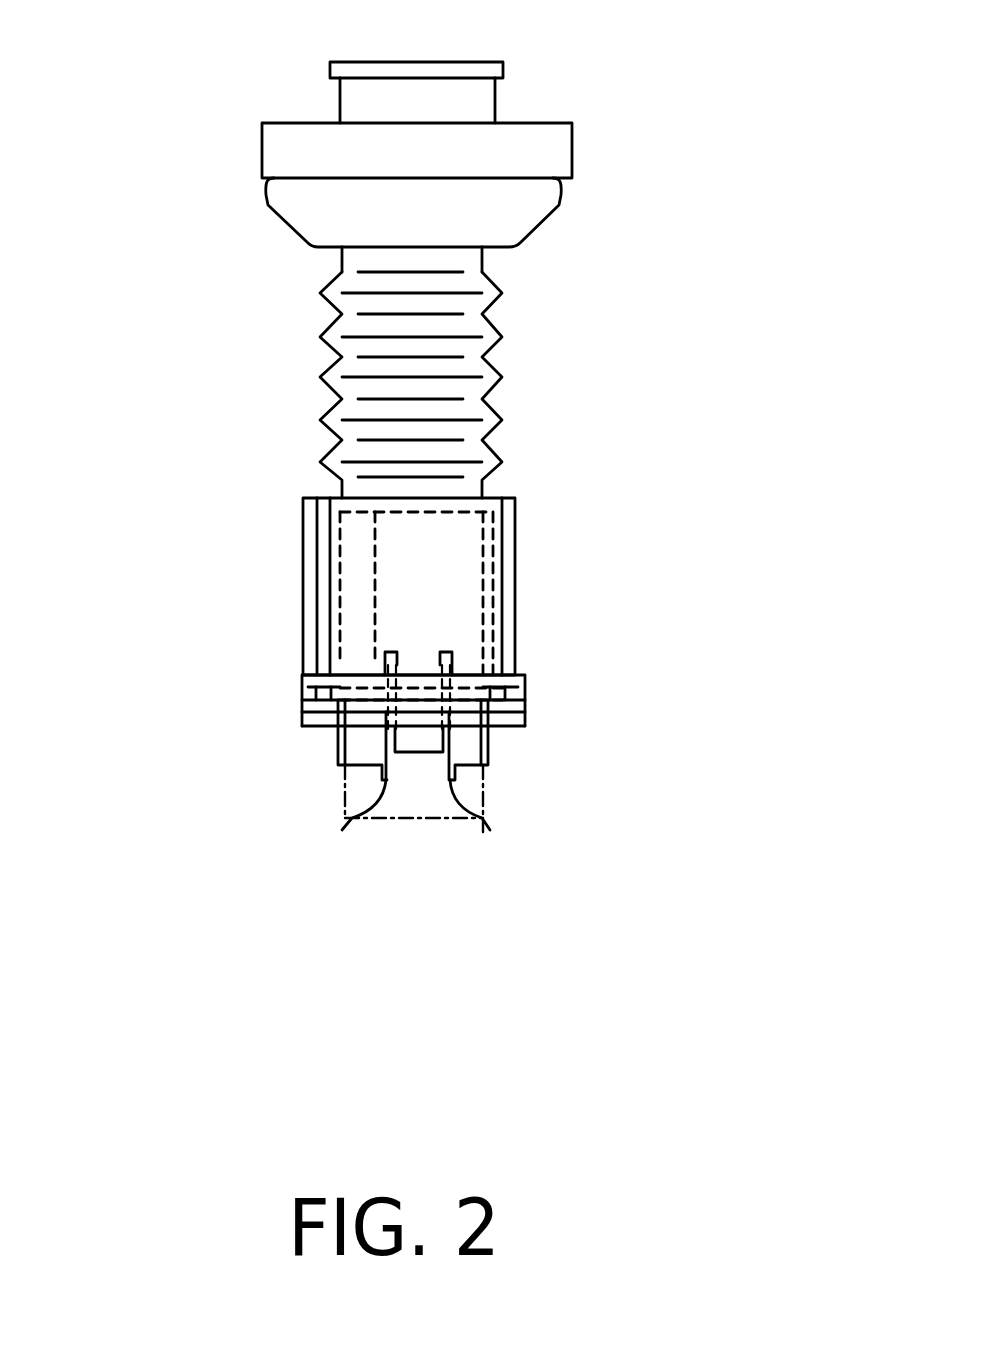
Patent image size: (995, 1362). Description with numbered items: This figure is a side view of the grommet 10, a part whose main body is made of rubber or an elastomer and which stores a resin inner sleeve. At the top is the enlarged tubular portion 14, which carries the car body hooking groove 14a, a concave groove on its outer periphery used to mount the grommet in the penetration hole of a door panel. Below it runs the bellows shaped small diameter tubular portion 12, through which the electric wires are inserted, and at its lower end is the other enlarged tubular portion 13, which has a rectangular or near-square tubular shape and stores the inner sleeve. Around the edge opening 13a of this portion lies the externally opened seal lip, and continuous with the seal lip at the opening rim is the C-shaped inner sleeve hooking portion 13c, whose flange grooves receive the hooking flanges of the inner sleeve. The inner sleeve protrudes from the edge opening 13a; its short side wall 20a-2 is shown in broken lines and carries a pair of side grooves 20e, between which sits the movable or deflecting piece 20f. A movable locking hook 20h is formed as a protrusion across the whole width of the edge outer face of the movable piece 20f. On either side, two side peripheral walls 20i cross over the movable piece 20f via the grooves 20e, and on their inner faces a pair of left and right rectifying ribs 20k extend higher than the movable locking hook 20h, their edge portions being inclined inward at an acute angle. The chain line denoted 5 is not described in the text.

The grommet 10 is at (105, 33).
The enlarged tubular portion 14 is at (662, 145).
The car body hooking groove 14a is at (267, 184).
The bellows shaped small diameter tubular portion 12 is at (496, 331).
The enlarged tubular portion 13 is at (560, 608).
The edge opening 13a is at (308, 720).
The inner sleeve hooking portion 13c is at (524, 678).
The short side wall 20a-2 is at (450, 541).
The movable piece 20f is at (412, 666).
The side peripheral walls 20i is at (360, 751).
The side grooves 20e is at (465, 748).
The movable locking hook 20h is at (420, 740).
The rectifying ribs 20k is at (352, 830).
The panel 5 is at (390, 826).